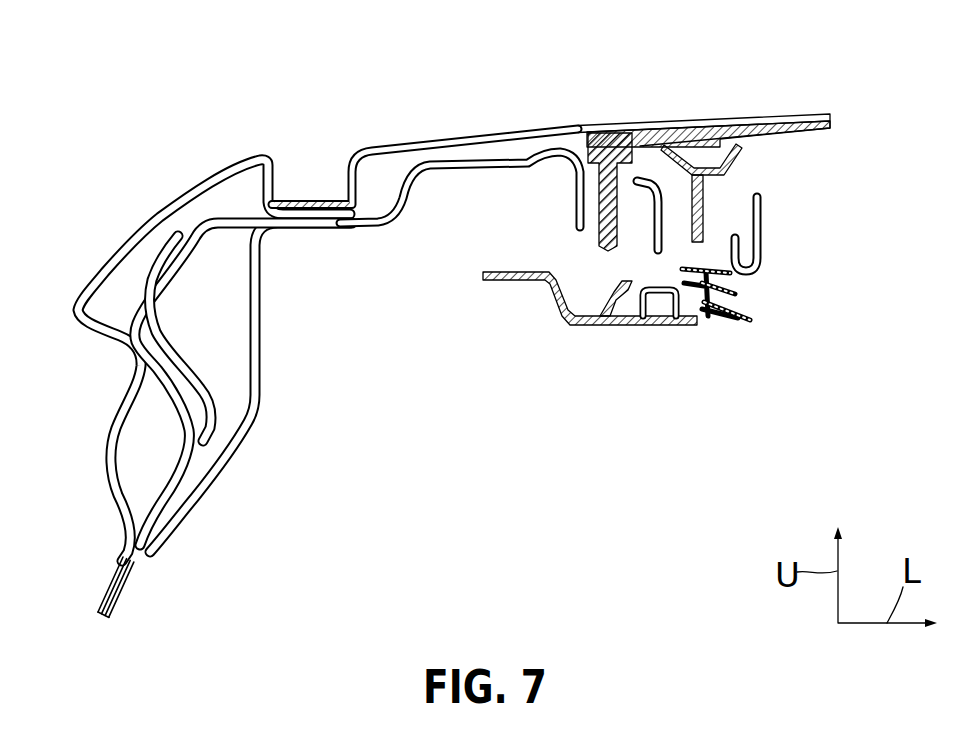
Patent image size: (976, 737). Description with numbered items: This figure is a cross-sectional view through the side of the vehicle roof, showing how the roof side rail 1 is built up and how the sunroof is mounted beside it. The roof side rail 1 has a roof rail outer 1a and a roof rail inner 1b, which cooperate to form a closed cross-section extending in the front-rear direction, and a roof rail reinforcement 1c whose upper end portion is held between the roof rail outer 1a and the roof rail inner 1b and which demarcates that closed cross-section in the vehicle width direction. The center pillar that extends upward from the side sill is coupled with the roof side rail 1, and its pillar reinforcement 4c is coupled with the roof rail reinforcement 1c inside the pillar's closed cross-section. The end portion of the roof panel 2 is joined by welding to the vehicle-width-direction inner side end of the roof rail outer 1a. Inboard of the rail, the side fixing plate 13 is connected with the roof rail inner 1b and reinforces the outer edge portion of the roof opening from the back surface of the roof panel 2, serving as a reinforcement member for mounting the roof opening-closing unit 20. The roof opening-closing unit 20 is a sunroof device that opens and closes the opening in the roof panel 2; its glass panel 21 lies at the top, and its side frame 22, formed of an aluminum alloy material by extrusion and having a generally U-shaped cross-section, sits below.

The roof side rail 1 is at (188, 388).
The roof rail outer 1a is at (107, 263).
The roof rail inner 1b is at (217, 470).
The roof rail reinforcement 1c is at (172, 273).
The pillar reinforcement 4c is at (173, 393).
The roof panel 2 is at (562, 137).
The side fixing plate 13 is at (453, 167).
The glass panel 21 is at (767, 117).
The roof opening-closing unit 20 is at (616, 372).
The side frame 22 is at (583, 327).